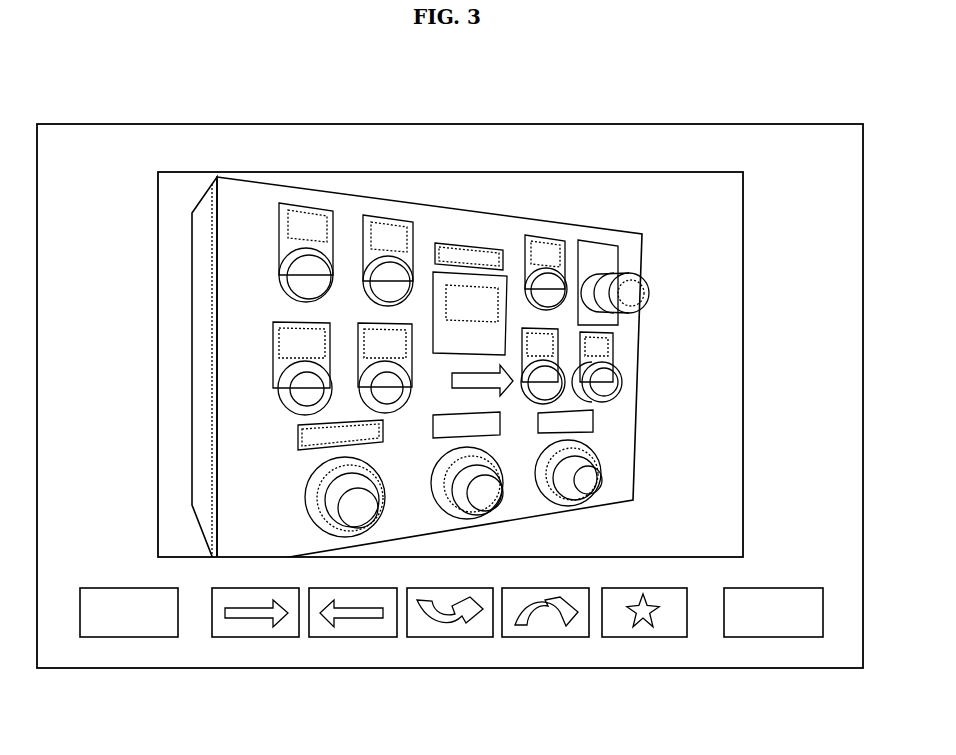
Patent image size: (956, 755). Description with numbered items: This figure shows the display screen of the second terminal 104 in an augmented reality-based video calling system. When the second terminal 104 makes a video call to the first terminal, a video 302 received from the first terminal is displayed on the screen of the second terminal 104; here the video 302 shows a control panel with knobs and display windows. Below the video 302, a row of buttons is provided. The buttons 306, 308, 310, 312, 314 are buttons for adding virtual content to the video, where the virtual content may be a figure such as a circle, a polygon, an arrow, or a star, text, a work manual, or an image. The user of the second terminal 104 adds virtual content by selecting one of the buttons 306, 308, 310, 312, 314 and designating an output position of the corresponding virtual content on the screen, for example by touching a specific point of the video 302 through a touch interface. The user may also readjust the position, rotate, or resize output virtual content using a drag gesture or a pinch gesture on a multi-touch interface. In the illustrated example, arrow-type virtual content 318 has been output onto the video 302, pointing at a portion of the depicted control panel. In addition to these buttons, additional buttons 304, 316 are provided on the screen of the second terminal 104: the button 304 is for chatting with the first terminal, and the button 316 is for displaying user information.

The second terminal 104 is at (145, 123).
The video 302 is at (620, 172).
The additional button 304 is at (130, 638).
The button 306 is at (258, 638).
The button 308 is at (354, 638).
The button 310 is at (451, 638).
The button 312 is at (548, 638).
The button 314 is at (644, 638).
The additional button 316 is at (774, 638).
The arrow-type virtual content 318 is at (473, 373).